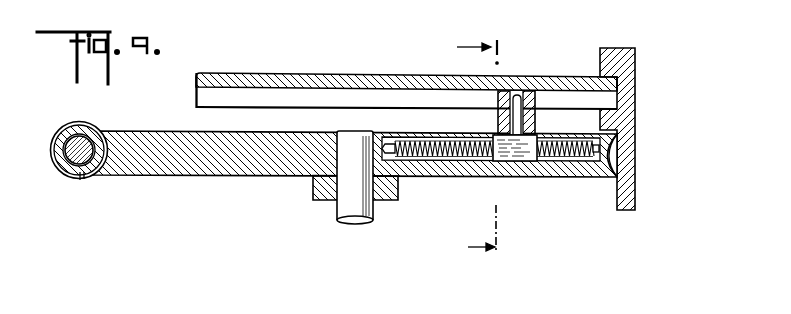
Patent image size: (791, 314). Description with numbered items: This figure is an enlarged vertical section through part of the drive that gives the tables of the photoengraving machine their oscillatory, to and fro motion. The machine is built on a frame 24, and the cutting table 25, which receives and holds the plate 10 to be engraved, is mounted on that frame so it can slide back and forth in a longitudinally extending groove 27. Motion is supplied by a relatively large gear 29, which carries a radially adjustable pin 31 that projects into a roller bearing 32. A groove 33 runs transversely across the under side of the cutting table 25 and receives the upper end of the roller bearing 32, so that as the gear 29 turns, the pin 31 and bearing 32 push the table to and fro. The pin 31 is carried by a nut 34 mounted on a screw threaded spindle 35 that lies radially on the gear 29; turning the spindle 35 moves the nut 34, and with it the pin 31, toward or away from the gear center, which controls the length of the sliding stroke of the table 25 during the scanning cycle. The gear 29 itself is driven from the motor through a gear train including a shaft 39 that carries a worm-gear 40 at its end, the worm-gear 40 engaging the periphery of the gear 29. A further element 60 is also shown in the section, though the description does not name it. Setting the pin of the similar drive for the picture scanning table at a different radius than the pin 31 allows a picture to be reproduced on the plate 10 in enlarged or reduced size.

The plate 10 is at (485, 148).
The frame 24 is at (632, 195).
The cutting table 25 is at (313, 86).
The longitudinally extending groove 27 is at (620, 94).
The gear 29 is at (235, 152).
The radially adjustable pin 31 is at (514, 97).
The roller bearing 32 is at (500, 118).
The groove 33 is at (205, 90).
The nut 34 is at (520, 150).
The screw threaded spindle 35 is at (441, 152).
The shaft 39 is at (73, 172).
The worm-gear 40 is at (60, 131).
The pin 60 is at (352, 202).